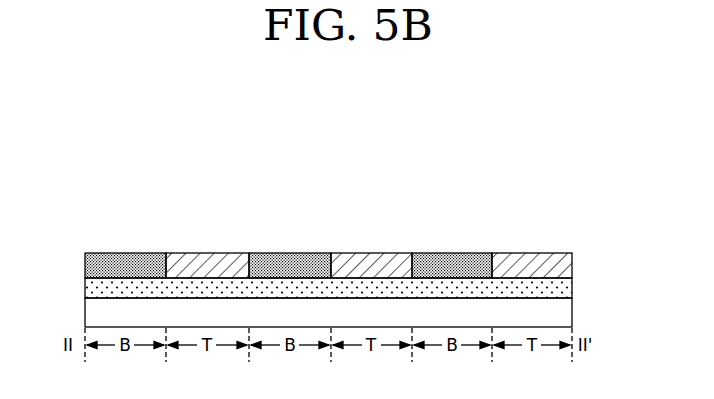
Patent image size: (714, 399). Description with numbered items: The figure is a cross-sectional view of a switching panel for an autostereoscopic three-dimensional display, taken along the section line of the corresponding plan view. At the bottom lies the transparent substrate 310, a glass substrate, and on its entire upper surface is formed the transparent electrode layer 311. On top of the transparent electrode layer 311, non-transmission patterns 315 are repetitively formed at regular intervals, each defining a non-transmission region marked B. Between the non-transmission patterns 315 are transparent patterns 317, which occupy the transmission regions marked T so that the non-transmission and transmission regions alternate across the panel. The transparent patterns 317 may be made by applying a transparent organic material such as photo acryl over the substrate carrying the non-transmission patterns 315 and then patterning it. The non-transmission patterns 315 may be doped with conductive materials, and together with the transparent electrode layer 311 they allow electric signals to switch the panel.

The transparent substrate 310 is at (562, 317).
The transparent electrode layer 311 is at (565, 290).
The non-transmission patterns 315 is at (126, 262).
The transparent patterns 317 is at (215, 262).